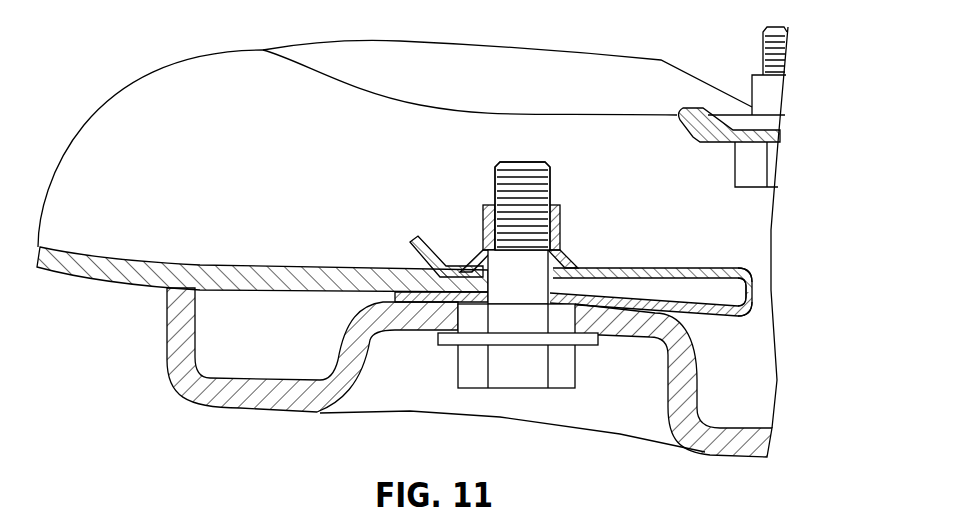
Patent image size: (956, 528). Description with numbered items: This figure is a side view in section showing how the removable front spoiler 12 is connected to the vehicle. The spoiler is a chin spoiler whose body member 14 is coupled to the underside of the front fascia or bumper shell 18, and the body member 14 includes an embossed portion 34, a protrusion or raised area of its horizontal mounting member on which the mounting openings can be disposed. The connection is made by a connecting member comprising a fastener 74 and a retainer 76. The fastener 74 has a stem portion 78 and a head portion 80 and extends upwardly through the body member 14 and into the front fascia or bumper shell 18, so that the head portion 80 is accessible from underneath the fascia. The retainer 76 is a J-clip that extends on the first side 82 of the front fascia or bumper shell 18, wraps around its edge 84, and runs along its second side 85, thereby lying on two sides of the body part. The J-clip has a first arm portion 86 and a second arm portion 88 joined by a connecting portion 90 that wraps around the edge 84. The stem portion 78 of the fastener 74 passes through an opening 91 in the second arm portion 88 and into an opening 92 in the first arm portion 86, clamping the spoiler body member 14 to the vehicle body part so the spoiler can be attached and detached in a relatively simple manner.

The removable front spoiler 12 is at (778, 448).
The body member 14 is at (757, 458).
The front fascia or bumper shell 18 is at (76, 282).
The embossed portion 34 is at (195, 403).
The fastener 74 is at (533, 160).
The retainer 76 is at (632, 268).
The stem portion 78 is at (500, 163).
The head portion 80 is at (532, 390).
The first side 82 is at (715, 268).
The edge 84 is at (749, 272).
The second side 85 is at (743, 316).
The first arm portion 86 is at (675, 268).
The second arm portion 88 is at (705, 317).
The connecting portion 90 is at (750, 288).
The opening in the second arm portion 91 is at (490, 300).
The opening in the first arm portion 92 is at (552, 228).